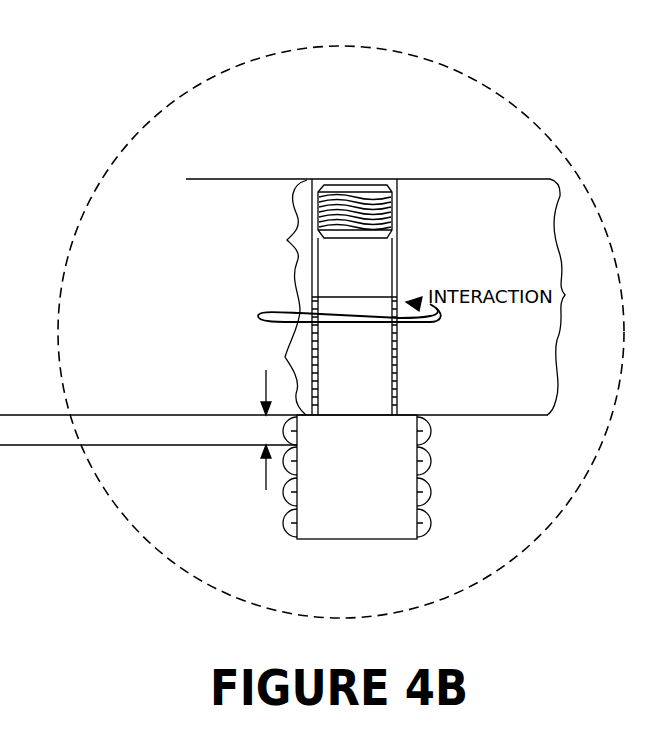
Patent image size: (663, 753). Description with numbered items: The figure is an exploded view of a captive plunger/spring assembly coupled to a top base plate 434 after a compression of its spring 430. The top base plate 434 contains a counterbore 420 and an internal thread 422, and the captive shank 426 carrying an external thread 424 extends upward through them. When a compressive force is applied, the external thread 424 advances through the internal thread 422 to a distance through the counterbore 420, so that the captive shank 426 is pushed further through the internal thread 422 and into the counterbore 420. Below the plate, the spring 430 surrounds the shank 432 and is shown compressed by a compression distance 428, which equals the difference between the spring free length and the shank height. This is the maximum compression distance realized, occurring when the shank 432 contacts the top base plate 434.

The counterbore 420 is at (287, 240).
The internal thread 422 is at (287, 357).
The external thread 424 is at (352, 197).
The captive shank 426 is at (390, 364).
The compression distance 428 is at (148, 430).
The spring 430 is at (430, 480).
The shank 432 is at (290, 531).
The top base plate 434 is at (556, 184).